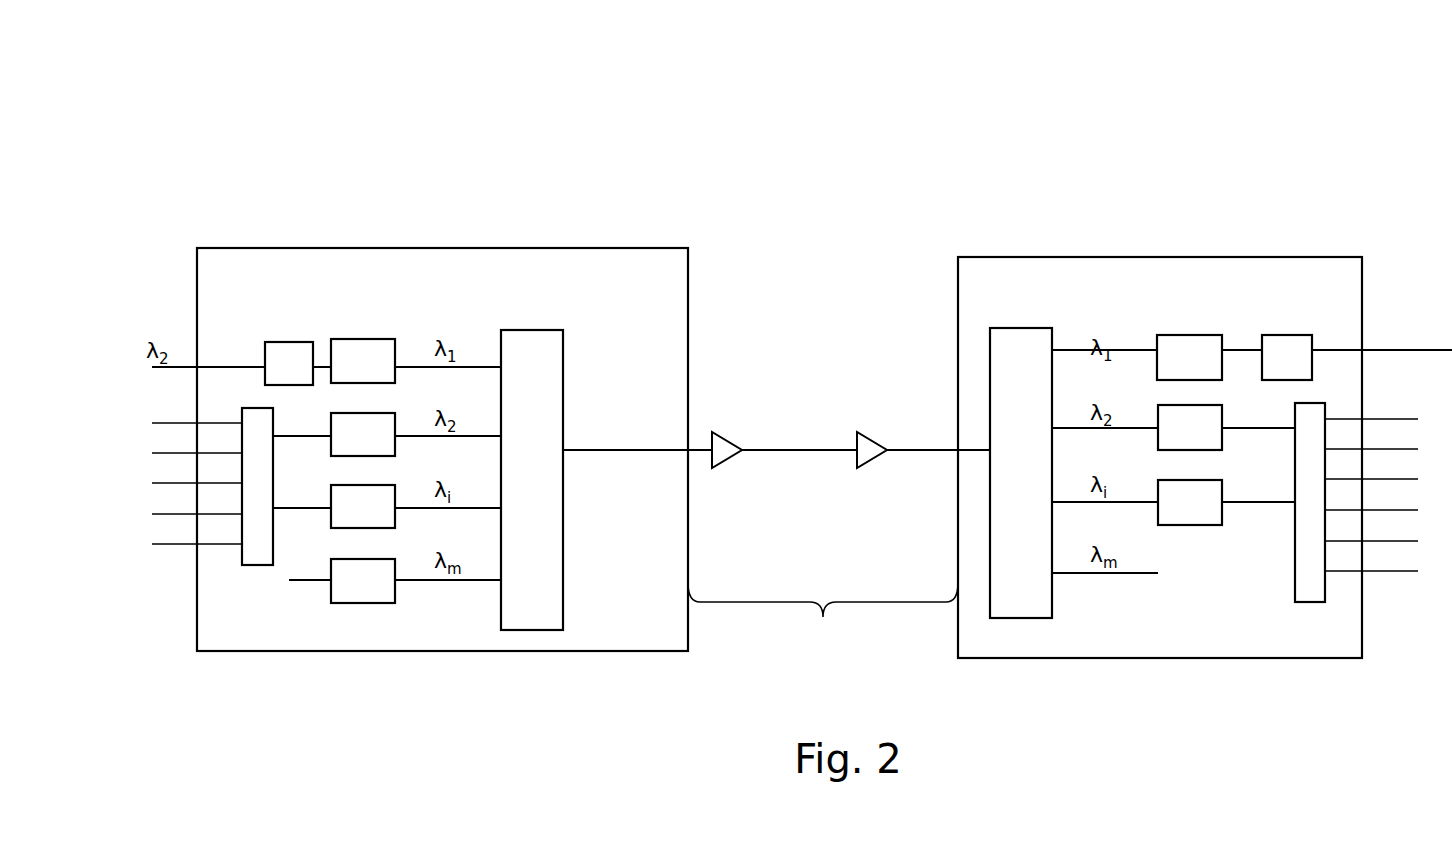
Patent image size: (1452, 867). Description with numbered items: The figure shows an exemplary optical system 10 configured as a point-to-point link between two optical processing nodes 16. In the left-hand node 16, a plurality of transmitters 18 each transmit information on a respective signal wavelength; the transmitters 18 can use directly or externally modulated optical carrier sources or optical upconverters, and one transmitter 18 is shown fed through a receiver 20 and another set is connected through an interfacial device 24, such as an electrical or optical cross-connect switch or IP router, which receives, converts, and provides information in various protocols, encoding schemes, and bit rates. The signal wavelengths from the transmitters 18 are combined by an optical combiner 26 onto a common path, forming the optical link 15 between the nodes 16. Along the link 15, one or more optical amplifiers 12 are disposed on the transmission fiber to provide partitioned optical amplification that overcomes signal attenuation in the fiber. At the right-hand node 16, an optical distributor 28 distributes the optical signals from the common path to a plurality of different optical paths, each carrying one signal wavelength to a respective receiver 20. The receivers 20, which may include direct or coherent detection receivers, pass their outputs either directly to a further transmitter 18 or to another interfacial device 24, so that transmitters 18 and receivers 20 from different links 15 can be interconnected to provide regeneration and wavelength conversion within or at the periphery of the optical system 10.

The optical system 10 is at (822, 128).
The optical amplifier 12 is at (730, 458).
The optical link 15 is at (823, 623).
The optical processing node 16 is at (433, 248).
The transmitter 18 is at (369, 339).
The optical receiver 20 is at (293, 340).
The interfacial device 24 is at (258, 567).
The optical combiner 26 is at (538, 330).
The optical distributor 28 is at (1008, 328).